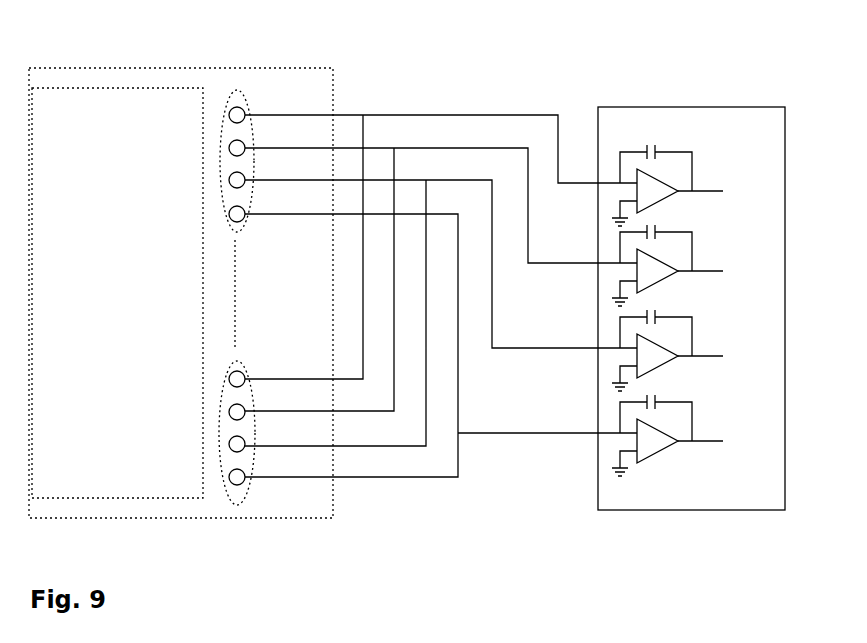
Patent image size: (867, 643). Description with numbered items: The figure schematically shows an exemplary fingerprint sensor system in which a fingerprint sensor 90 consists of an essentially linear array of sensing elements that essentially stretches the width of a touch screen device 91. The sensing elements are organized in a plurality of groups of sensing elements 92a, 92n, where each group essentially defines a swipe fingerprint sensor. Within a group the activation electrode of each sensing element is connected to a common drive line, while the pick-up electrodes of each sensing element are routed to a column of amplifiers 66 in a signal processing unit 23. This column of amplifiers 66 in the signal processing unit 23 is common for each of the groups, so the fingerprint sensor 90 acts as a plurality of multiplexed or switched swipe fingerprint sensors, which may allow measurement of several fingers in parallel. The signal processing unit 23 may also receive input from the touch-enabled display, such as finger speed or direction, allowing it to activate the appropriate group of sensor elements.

The fingerprint sensor 90 is at (246, 51).
The touch screen device 91 is at (117, 293).
The group of sensing elements 92a is at (253, 159).
The group of sensing elements 92n is at (252, 428).
The signal processing unit 23 is at (691, 308).
The amplifiers 66 is at (667, 310).